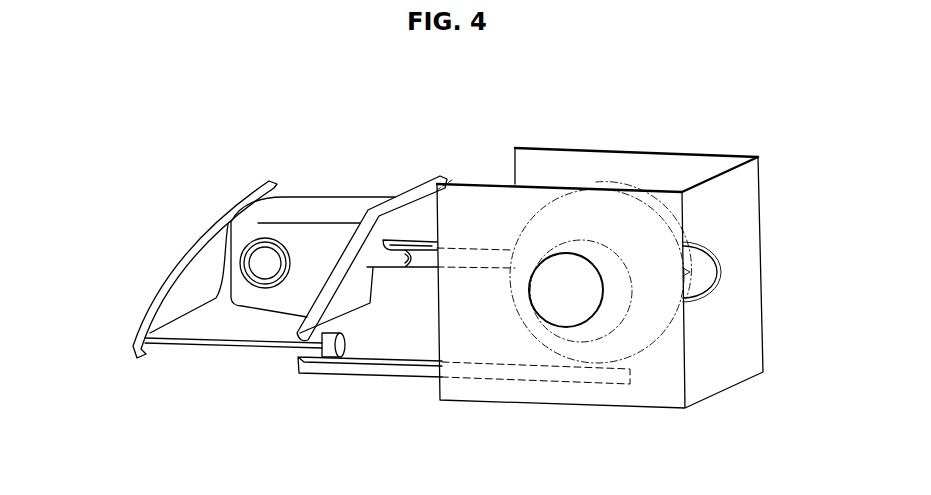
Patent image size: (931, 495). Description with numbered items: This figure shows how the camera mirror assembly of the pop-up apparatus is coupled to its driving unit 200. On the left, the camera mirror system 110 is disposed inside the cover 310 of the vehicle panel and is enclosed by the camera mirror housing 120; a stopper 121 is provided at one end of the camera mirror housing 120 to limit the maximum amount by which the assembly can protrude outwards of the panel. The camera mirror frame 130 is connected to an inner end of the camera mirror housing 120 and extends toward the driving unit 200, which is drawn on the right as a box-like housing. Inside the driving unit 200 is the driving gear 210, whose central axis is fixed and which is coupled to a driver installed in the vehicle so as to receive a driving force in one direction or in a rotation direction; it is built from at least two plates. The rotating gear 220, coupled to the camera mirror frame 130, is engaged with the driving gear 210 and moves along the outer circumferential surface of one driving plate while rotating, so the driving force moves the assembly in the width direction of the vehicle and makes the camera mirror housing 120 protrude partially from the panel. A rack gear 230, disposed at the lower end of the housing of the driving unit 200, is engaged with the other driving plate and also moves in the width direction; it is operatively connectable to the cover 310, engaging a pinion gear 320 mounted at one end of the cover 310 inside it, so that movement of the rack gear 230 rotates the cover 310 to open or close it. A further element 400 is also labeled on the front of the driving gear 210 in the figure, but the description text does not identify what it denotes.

The camera mirror system 110 is at (262, 262).
The camera mirror housing 120 is at (307, 213).
The stopper 121 is at (291, 328).
The camera mirror frame 130 is at (418, 245).
The driving unit 200 is at (660, 147).
The driving gear 210 is at (648, 340).
The rotating gear 220 is at (713, 247).
The rack gear 230 is at (412, 372).
The cover 310 is at (180, 258).
The pinion gear 320 is at (310, 358).
The drive shaft 400 is at (562, 303).